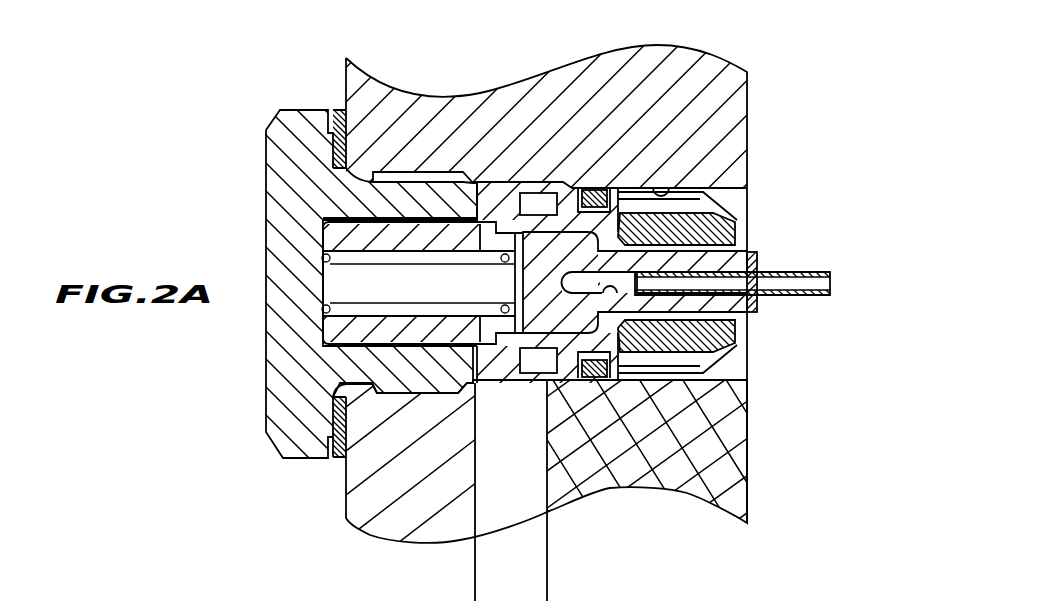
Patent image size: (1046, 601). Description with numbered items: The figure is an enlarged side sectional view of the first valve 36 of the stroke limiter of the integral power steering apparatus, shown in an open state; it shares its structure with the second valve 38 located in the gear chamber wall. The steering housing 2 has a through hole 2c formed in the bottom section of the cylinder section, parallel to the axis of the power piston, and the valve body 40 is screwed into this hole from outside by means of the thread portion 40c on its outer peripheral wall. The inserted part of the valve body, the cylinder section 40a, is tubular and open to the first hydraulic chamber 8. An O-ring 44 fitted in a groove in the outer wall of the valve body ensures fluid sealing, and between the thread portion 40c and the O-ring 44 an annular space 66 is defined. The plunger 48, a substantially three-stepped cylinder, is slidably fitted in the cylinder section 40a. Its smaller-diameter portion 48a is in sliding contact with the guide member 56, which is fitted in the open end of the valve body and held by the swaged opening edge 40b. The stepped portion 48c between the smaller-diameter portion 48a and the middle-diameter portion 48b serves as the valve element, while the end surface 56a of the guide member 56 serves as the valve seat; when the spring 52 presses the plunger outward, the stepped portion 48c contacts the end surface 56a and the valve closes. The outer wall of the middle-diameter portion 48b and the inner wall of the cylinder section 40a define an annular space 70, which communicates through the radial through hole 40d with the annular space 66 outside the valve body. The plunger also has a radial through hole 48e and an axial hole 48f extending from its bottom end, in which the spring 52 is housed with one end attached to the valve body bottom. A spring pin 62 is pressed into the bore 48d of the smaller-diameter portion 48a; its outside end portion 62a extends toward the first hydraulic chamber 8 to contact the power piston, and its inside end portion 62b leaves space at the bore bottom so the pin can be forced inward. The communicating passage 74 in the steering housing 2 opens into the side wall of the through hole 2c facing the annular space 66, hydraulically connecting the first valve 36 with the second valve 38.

The steering housing 2 is at (711, 114).
The through hole 2c is at (655, 188).
The first valve 36 is at (627, 114).
The valve body 40 is at (390, 199).
The cylinder section 40a is at (408, 372).
The opening edge 40b is at (740, 215).
The thread portion 40c is at (447, 172).
The through hole 40d is at (549, 385).
The O-ring 44 is at (583, 340).
The plunger 48 is at (467, 240).
The smaller-diameter portion 48a is at (750, 255).
The middle-diameter portion 48b is at (573, 192).
The stepped portion 48c is at (617, 190).
The bore 48d is at (613, 378).
The radial through hole 48e is at (502, 234).
The axial hole 48f is at (380, 335).
The spring 52 is at (380, 335).
The guide member 56 is at (746, 412).
The end surface 56a is at (671, 385).
The spring pin 62 is at (783, 272).
The outside end portion 62a is at (819, 271).
The inside end portion 62b is at (748, 483).
The annular space 66 is at (543, 188).
The annular space 70 is at (474, 385).
The communicating passage 74 is at (553, 590).
The first hydraulic chamber 8 is at (822, 367).
The second valve 38 is at (668, 591).